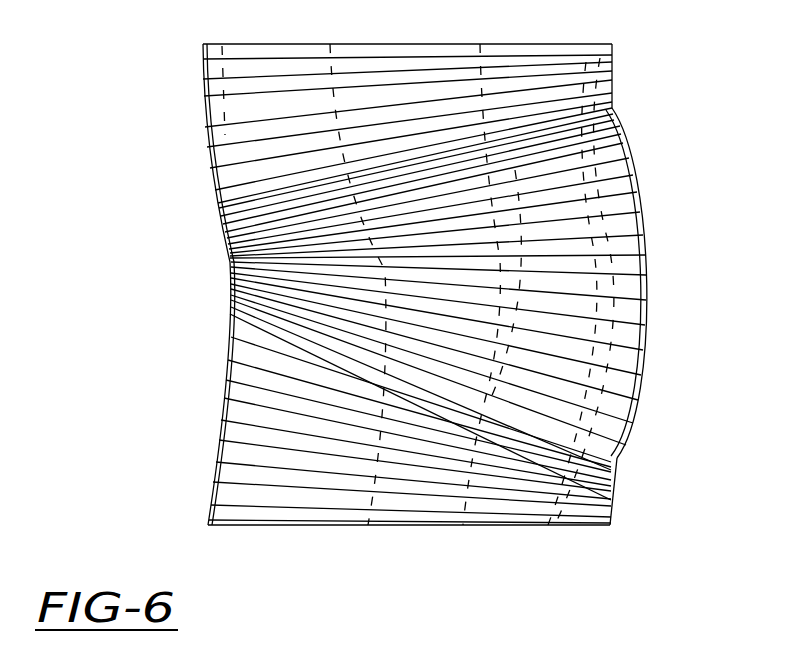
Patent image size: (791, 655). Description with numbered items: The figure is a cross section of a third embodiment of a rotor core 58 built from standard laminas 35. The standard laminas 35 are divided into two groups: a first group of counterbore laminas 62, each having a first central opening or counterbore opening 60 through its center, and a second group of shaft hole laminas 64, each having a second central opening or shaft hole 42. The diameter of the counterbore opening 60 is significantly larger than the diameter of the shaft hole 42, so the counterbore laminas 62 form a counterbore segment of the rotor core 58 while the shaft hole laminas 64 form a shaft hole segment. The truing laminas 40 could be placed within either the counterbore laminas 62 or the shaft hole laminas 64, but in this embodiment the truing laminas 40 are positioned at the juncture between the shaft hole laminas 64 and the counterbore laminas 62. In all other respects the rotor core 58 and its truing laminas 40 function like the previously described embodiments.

The standard laminas 35 is at (203, 54).
The truing laminas 40 is at (225, 218).
The shaft hole 42 is at (422, 526).
The rotor core 58 is at (658, 40).
The counterbore opening 60 is at (480, 56).
The counterbore laminas 62 is at (615, 44).
The shaft hole laminas 64 is at (620, 459).